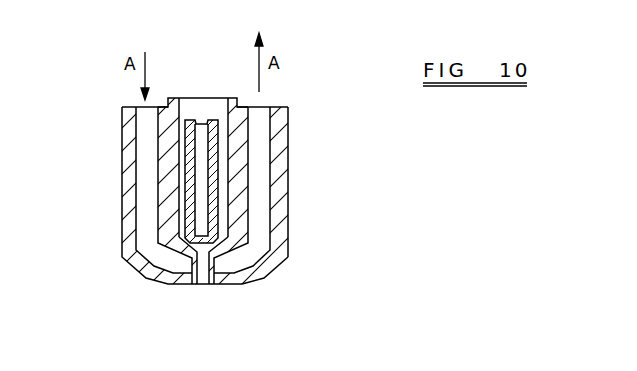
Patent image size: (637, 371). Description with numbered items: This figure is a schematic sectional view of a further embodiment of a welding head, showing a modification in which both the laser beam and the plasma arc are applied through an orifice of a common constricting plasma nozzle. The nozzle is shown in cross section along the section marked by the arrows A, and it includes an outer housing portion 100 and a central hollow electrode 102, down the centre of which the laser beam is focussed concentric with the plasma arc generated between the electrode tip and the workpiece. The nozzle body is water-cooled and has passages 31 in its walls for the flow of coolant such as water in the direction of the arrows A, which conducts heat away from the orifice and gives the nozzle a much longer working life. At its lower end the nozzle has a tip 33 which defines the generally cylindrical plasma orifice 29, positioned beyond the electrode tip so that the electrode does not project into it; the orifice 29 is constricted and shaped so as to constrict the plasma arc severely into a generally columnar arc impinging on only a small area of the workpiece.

The outer housing cup 100 is at (289, 151).
The inner tube insert 102 is at (186, 183).
The passages 31 is at (262, 190).
The tip 33 is at (297, 257).
The plasma orifice 29 is at (207, 281).